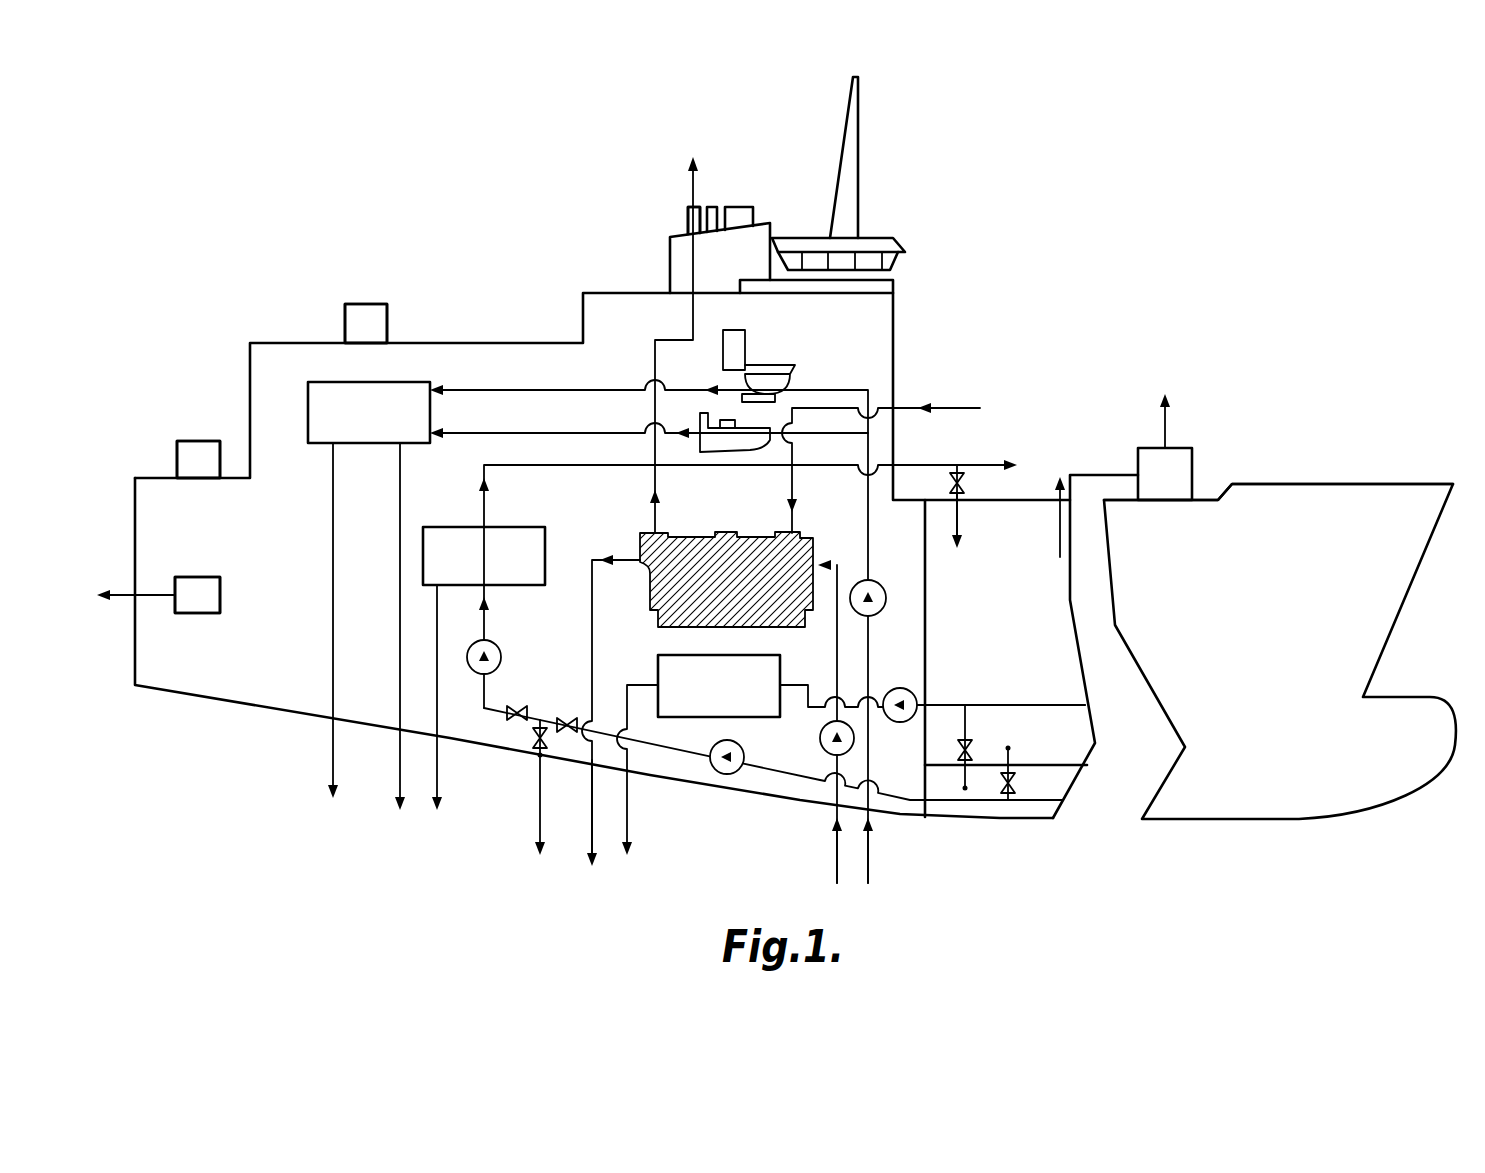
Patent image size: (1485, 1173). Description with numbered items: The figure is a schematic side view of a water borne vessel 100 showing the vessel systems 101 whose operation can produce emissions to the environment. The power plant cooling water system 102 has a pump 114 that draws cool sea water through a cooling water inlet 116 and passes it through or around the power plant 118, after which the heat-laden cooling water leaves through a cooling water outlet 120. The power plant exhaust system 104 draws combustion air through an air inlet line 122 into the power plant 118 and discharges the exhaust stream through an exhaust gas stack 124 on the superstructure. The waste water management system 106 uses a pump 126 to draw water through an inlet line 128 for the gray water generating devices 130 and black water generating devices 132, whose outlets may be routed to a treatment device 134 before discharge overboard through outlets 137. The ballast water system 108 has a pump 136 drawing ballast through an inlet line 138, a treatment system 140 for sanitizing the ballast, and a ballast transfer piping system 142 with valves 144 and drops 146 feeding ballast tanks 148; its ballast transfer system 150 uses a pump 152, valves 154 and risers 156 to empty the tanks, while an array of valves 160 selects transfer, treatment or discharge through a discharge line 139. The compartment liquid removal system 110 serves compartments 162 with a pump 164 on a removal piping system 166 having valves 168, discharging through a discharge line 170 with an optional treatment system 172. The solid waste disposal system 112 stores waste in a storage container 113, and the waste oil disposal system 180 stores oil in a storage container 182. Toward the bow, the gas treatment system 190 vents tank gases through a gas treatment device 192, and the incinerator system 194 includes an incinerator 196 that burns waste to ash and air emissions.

The water borne vessel 100 is at (905, 240).
The vessel systems 101 is at (1072, 298).
The power plant cooling water system 102 is at (600, 546).
The power plant exhaust system 104 is at (645, 352).
The waste water management system 106 is at (480, 375).
The ballast water system 108 is at (540, 433).
The compartment liquid removal system 110 is at (940, 700).
The solid waste disposal system 112 is at (196, 430).
The storage container 113 is at (177, 460).
The pump 114 is at (820, 745).
The cooling water inlet 116 is at (837, 850).
The power plant 118 is at (725, 533).
The cooling water outlet 120 is at (590, 797).
The air inlet line 122 is at (958, 408).
The exhaust gas stack 124 is at (686, 221).
The pump 126 is at (886, 600).
The inlet line 128 is at (870, 850).
The gray water generating devices 130 is at (700, 428).
The black water generating devices 132 is at (772, 366).
The treatment device 134 is at (308, 410).
The pump 136 is at (498, 656).
The outlets 137 is at (400, 620).
The inlet line 138 is at (540, 800).
The discharge line 139 is at (440, 768).
The treatment system 140 is at (514, 527).
The ballast transfer piping system 142 is at (998, 465).
The valves 144 is at (966, 484).
The drops 146 is at (960, 522).
The ballast tanks 148 is at (1013, 500).
The ballast transfer system 150 is at (772, 782).
The pump 152 is at (745, 758).
The valves 154 is at (1020, 788).
The risers 156 is at (1085, 765).
The array of valves 160 is at (517, 704).
The compartments 162 is at (987, 760).
The pump 164 is at (895, 688).
The removal piping system 166 is at (1047, 703).
The valves 168 is at (956, 750).
The discharge line 170 is at (628, 805).
The treatment system 172 is at (658, 663).
The waste oil disposal system 180 is at (194, 565).
The storage container 182 is at (220, 595).
The gas treatment system 190 is at (1225, 428).
The gas treatment device 192 is at (1170, 440).
The incinerator system 194 is at (364, 290).
The incinerator 196 is at (345, 318).